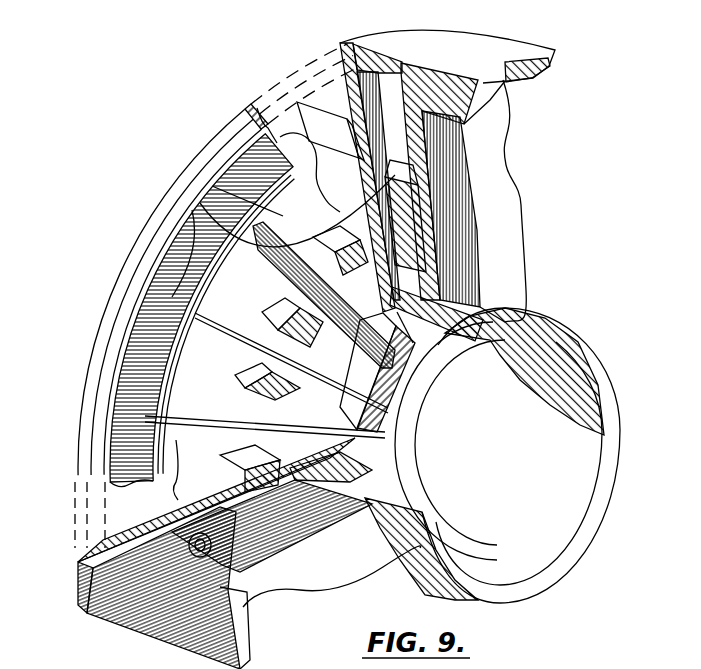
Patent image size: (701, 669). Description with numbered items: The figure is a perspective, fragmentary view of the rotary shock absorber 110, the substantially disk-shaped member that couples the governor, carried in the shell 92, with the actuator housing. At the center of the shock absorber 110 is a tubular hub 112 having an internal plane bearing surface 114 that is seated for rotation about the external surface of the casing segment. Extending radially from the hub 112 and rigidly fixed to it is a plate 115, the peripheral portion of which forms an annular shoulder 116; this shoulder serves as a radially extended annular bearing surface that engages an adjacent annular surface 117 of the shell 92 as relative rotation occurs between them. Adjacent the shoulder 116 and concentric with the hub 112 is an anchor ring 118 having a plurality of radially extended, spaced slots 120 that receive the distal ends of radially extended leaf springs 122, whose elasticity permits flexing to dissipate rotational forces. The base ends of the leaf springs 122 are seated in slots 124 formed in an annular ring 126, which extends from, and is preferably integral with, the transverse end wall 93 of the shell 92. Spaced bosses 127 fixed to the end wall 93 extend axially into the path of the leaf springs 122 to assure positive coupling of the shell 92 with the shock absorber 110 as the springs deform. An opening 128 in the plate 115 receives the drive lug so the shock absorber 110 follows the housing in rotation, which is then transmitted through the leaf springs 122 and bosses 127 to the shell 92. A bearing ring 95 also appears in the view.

The shell 92 is at (530, 72).
The transverse end wall 93 is at (492, 208).
The bearing ring 95 is at (583, 335).
The rotary shock absorber 110 is at (175, 168).
The tubular hub 112 is at (422, 330).
The internal plane bearing surface 114 is at (505, 497).
The plate 115 is at (178, 480).
The annular shoulder 116 is at (247, 113).
The annular surface 117 is at (268, 142).
The anchor ring 118 is at (397, 58).
The slots 120 is at (192, 211).
The leaf springs 122 is at (135, 325).
The slots 124 is at (386, 421).
The annular ring 126 is at (420, 300).
The bosses 127 is at (328, 238).
The opening 128 is at (180, 518).